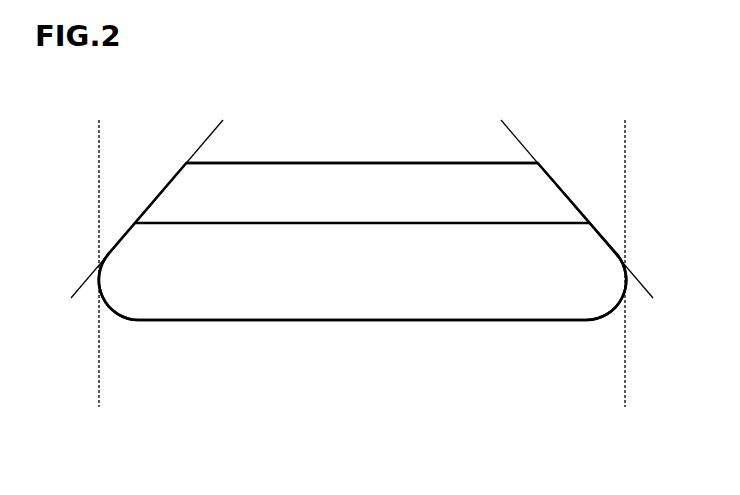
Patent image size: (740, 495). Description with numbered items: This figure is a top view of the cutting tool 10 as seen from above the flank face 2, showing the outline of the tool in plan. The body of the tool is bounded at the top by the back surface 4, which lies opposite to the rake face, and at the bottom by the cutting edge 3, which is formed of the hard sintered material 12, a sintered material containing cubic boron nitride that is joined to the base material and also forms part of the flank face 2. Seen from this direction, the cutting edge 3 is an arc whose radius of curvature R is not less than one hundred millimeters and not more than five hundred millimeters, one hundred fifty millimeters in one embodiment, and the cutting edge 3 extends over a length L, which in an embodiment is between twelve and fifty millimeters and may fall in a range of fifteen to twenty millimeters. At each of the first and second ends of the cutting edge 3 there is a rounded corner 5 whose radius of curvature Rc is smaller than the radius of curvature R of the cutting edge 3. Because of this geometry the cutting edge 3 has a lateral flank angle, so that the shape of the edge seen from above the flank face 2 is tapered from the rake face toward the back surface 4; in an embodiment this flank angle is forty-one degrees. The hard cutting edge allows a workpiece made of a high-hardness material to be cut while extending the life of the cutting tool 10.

The cutting tool 10 is at (568, 102).
The flank face 2 is at (500, 281).
The cutting edge 3 is at (463, 322).
The back surface 4 is at (425, 163).
The corner 5 is at (92, 298).
The hard sintered material 12 is at (567, 302).
The length of cutting edge L is at (624, 394).
The radius of curvature of cutting edge R is at (362, 263).
The radius of curvature of corner Rc is at (152, 263).